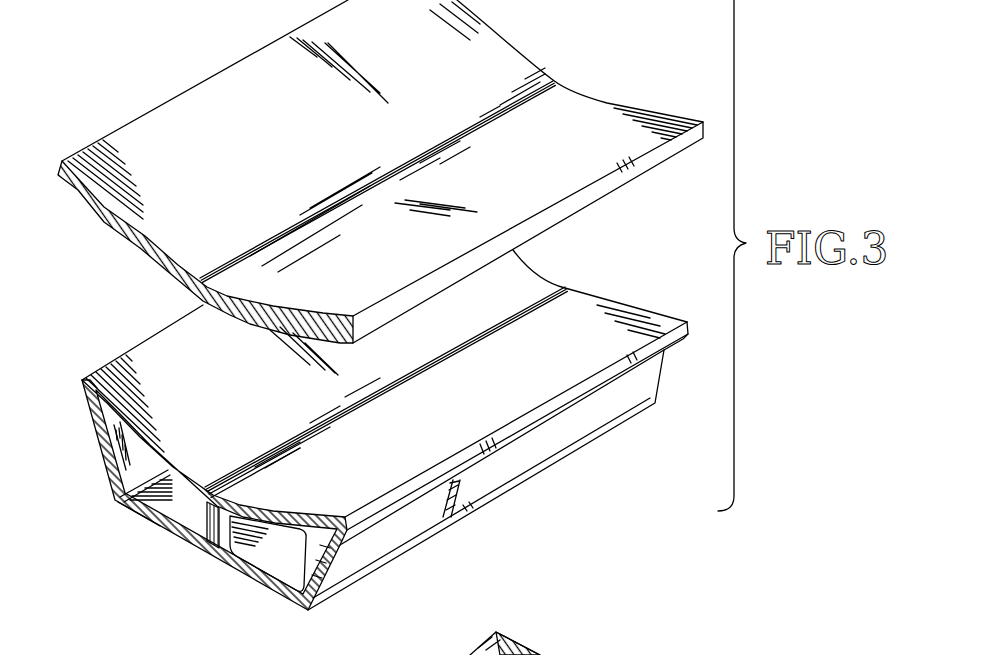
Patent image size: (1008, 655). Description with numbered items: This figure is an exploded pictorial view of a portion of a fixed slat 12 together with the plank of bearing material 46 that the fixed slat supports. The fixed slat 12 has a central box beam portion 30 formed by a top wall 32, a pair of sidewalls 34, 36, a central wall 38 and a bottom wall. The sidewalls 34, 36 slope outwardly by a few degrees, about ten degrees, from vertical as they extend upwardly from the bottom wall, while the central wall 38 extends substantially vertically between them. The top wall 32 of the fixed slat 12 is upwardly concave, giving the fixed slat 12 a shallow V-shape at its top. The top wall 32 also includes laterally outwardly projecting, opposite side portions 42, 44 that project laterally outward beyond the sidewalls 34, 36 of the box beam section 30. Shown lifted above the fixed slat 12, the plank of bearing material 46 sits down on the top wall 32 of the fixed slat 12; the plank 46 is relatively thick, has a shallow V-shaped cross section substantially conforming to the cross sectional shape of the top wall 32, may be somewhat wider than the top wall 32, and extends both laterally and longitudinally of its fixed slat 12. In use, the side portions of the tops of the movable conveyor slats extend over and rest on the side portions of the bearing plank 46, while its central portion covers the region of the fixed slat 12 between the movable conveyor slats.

The fixed slat 12 is at (166, 497).
The central box beam portion 30 is at (143, 512).
The top wall 32 is at (250, 517).
The sidewall 34 is at (106, 455).
The sidewall 36 is at (315, 570).
The central wall 38 is at (207, 527).
The side portion 42 is at (93, 408).
The side portion 44 is at (328, 535).
The plank of bearing material 46 is at (334, 136).